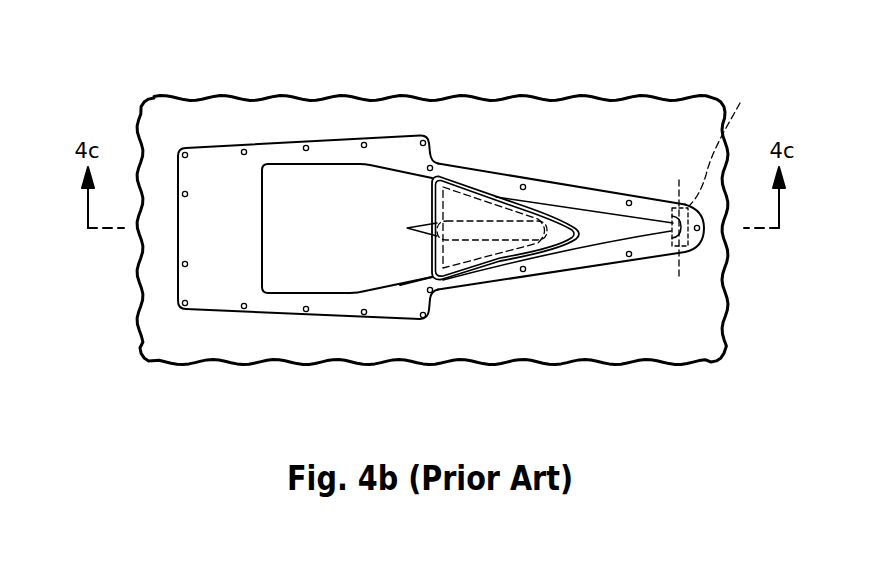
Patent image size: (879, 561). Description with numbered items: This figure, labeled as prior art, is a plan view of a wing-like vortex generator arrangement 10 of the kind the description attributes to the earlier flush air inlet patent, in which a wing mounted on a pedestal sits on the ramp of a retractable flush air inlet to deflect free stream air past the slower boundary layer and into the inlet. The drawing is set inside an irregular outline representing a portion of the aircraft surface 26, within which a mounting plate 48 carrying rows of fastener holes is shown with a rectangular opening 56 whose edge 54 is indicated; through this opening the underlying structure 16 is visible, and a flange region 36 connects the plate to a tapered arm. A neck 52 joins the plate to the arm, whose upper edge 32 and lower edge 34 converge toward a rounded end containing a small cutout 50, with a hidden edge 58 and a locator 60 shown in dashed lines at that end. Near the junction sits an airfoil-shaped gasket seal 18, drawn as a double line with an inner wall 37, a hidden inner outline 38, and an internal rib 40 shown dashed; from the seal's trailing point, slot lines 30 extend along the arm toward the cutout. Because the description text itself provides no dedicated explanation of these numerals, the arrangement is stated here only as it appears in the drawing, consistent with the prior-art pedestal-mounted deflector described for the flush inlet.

The seal assembly 10 is at (314, 168).
The vane 16 is at (285, 266).
The gasket seal 18 is at (501, 189).
The casing 26 is at (689, 335).
The airfoil slot 30 is at (580, 233).
The upper arm edge 32 is at (560, 187).
The lower arm edge 34 is at (531, 268).
The flange 36 is at (418, 258).
The inner gasket wall 37 is at (465, 275).
The hidden seal outline 38 is at (555, 245).
The rib 40 is at (408, 229).
The mounting plate 48 is at (207, 170).
The end cutout 50 is at (667, 233).
The neck 52 is at (408, 180).
The opening edge 54 is at (386, 289).
The opening 56 is at (261, 228).
The hidden edge 58 is at (723, 142).
The locator 60 is at (678, 201).